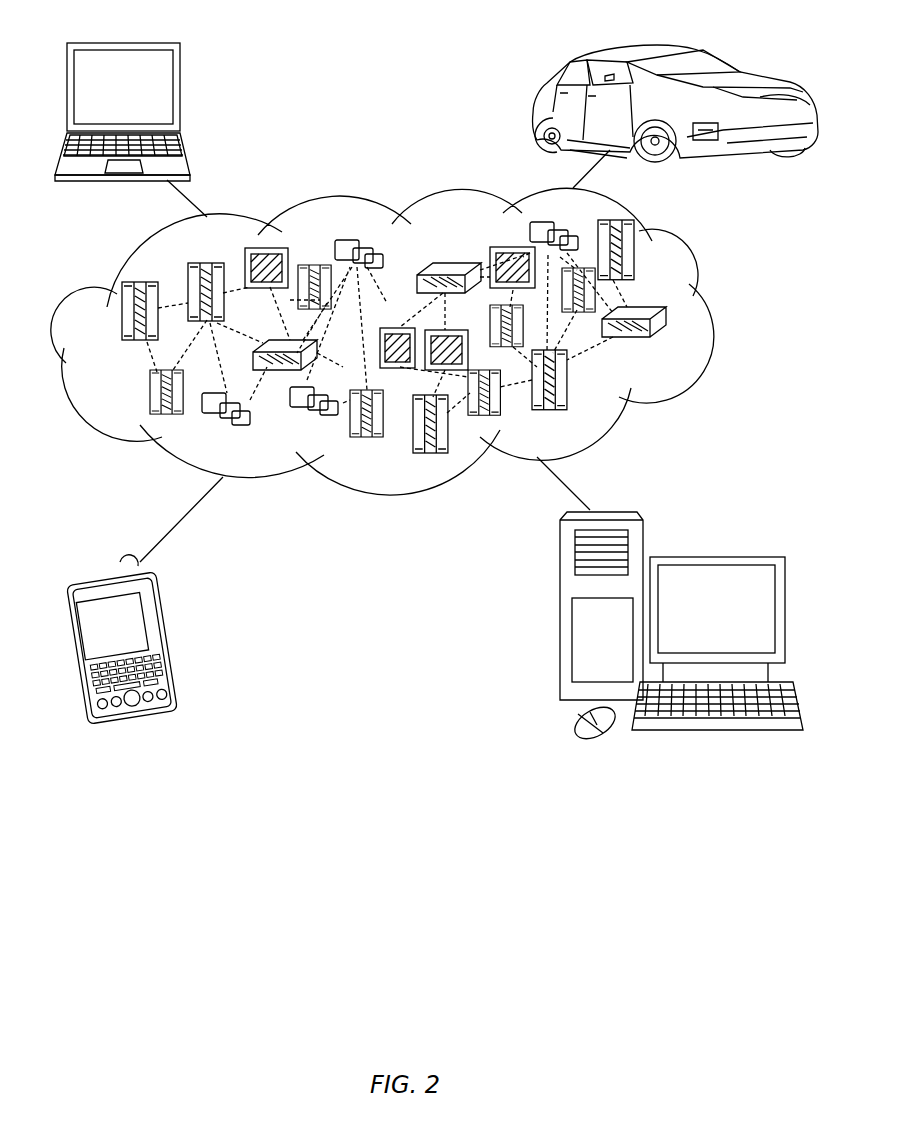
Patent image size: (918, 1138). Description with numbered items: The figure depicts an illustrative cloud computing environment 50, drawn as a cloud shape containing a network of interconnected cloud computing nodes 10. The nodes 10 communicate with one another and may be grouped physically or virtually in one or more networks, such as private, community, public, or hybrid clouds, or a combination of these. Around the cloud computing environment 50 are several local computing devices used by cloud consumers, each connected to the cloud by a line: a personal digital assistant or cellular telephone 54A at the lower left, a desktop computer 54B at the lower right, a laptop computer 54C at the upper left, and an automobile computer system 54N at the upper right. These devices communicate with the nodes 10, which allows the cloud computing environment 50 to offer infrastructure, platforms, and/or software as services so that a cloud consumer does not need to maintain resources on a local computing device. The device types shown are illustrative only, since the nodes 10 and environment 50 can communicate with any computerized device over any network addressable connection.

The cloud computing node 10 is at (670, 348).
The cloud computing environment 50 is at (713, 320).
The personal digital assistant or cellular telephone 54A is at (173, 630).
The desktop computer 54B is at (712, 557).
The laptop computer 54C is at (182, 92).
The automobile computer system 54N is at (535, 110).